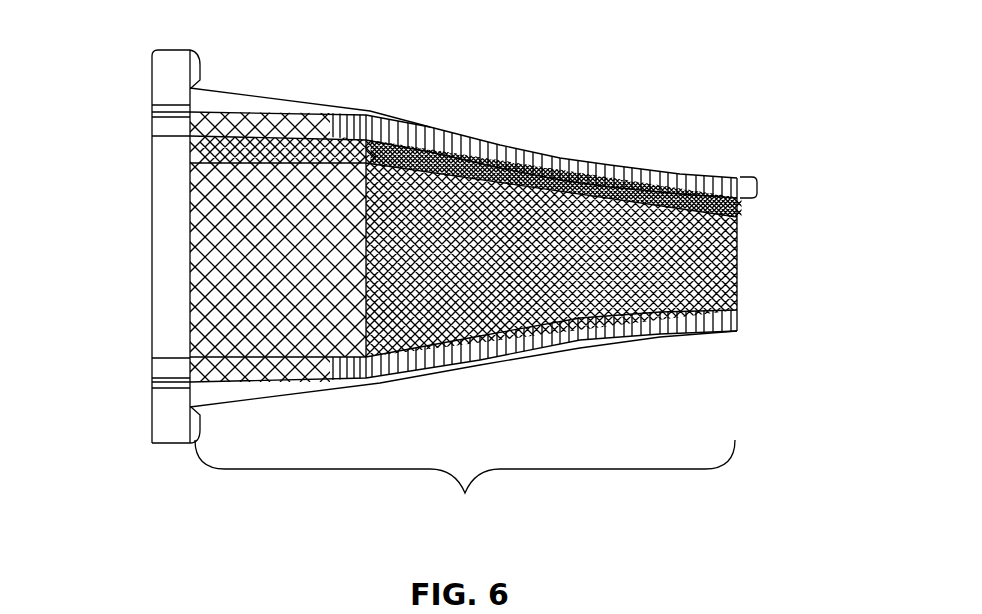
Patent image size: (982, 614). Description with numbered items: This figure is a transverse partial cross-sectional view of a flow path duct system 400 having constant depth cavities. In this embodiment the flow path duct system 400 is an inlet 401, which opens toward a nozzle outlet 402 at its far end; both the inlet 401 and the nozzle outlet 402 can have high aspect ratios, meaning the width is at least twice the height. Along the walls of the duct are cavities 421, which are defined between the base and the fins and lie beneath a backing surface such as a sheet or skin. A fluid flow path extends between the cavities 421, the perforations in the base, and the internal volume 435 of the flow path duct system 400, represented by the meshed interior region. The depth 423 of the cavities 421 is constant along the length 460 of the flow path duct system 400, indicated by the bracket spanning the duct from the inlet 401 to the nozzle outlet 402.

The flow path duct system 400 is at (134, 42).
The inlet 401 is at (105, 120).
The nozzle outlet 402 is at (752, 263).
The cavities 421 is at (328, 115).
The depth 423 is at (757, 188).
The internal volume 435 is at (210, 261).
The length 460 is at (465, 485).